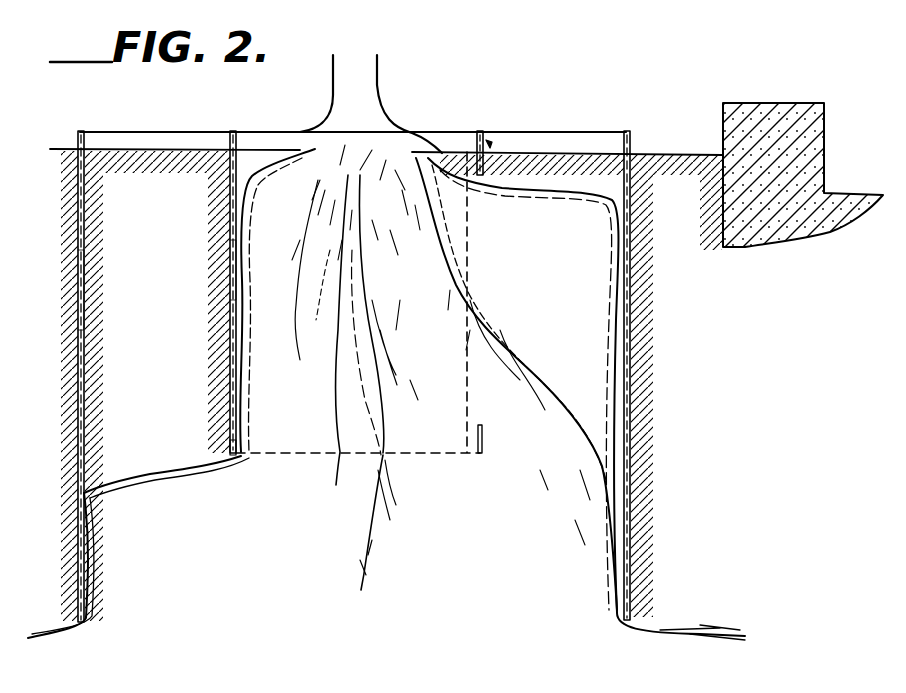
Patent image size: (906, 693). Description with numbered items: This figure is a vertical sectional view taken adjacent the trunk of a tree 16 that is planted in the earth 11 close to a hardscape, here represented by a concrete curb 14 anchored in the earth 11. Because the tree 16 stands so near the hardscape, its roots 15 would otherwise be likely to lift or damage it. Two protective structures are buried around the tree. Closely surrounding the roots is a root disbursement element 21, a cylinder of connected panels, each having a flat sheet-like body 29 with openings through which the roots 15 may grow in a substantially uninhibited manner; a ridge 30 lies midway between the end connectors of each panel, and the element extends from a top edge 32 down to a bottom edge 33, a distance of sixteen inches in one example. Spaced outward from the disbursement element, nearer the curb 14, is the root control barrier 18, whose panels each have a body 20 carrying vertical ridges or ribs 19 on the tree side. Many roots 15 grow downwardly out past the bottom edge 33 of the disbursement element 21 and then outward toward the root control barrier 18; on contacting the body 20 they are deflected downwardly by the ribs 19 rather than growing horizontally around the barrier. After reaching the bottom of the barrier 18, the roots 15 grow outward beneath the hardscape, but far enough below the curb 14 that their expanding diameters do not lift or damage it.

The earth 11 is at (150, 150).
The concrete curb 14 is at (803, 118).
The roots 15 is at (592, 200).
The tree 16 is at (376, 80).
The root control barrier 18 is at (634, 328).
The vertical ridges or ribs 19 is at (88, 131).
The body 20 is at (79, 291).
The root disbursement element 21 is at (488, 143).
The sheet-like body 29 is at (230, 273).
The ridge 30 is at (479, 138).
The top edge 32 is at (238, 131).
The bottom edge 33 is at (232, 452).